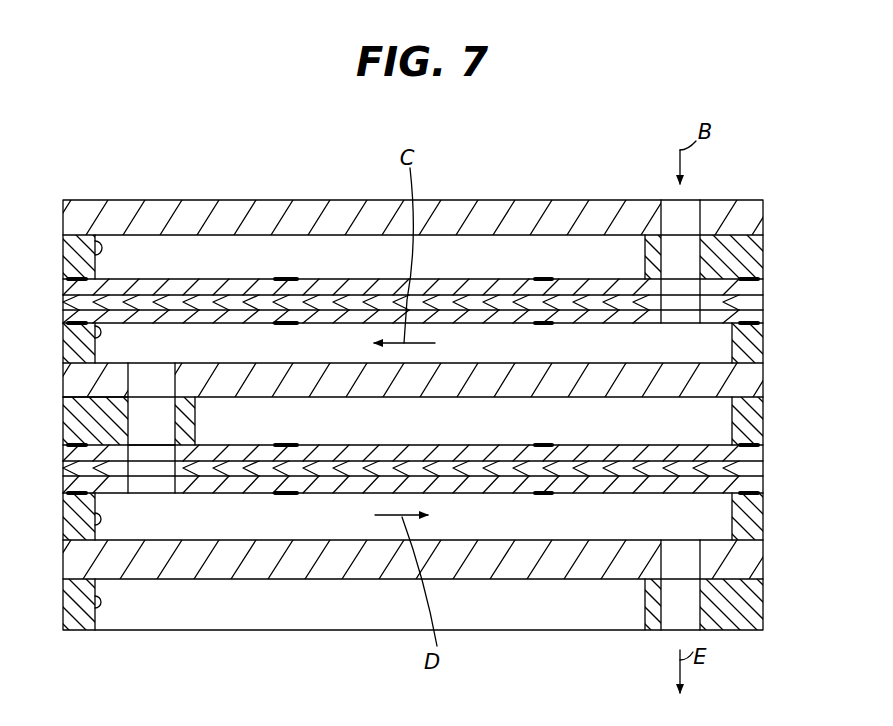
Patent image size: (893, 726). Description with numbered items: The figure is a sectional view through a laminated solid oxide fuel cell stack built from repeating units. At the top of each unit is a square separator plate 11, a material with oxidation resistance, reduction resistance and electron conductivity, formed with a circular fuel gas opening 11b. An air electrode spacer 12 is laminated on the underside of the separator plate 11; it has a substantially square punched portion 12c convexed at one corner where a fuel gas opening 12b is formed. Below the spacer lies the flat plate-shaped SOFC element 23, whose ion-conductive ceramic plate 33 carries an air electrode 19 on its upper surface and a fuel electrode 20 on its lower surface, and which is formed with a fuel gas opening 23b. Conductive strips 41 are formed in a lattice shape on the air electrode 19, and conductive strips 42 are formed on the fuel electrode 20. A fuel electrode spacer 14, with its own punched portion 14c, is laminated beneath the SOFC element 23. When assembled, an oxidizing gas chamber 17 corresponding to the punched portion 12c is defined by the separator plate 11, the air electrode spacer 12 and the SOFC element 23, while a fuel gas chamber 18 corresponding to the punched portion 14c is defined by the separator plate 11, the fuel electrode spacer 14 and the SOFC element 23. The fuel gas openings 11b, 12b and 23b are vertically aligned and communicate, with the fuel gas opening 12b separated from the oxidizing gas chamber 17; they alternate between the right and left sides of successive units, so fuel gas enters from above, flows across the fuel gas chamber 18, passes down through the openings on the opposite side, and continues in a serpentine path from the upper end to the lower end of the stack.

The separator plate 11 is at (547, 200).
The fuel gas opening 11b is at (700, 198).
The air electrode spacer 12 is at (766, 262).
The fuel gas opening 12b is at (700, 300).
The punched portion 12c is at (100, 250).
The fuel electrode spacer 14 is at (766, 346).
The punched portion 14c is at (85, 345).
The oxidizing gas chamber 17 is at (479, 433).
The fuel gas chamber 18 is at (623, 343).
The air electrode 19 is at (766, 287).
The fuel electrode 20 is at (766, 320).
The flat plate-shaped SOFC element 23 is at (58, 273).
The fuel gas opening 23b is at (764, 243).
The ion-conductive ceramic plate 33 is at (766, 302).
The conductive strips 41 is at (278, 276).
The conductive strips 42 is at (288, 495).